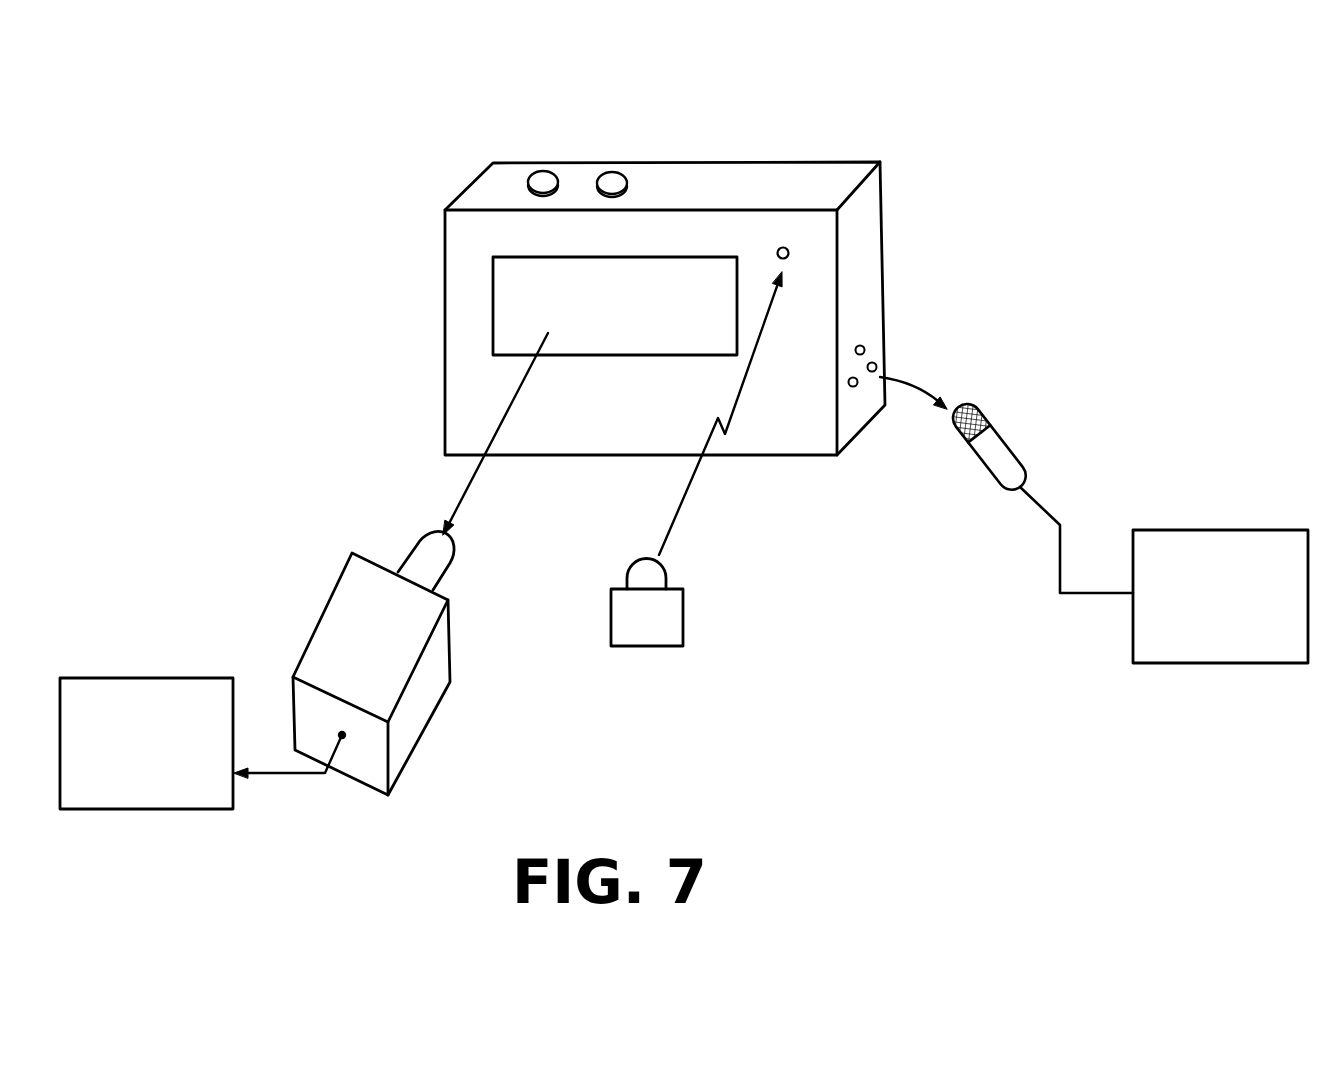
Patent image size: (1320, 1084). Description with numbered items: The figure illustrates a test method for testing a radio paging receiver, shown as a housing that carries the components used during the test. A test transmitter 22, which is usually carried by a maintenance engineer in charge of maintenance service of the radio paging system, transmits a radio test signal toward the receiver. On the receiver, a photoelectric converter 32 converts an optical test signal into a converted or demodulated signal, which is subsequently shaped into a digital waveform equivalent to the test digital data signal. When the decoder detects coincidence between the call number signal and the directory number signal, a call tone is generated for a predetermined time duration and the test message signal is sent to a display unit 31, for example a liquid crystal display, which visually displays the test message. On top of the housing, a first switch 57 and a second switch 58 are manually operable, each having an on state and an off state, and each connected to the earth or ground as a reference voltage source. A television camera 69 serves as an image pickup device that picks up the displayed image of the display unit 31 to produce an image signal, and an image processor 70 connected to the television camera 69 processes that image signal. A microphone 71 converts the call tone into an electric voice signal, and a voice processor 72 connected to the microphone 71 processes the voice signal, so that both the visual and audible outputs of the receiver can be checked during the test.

The test transmitter 22 is at (683, 614).
The display unit 31 is at (498, 307).
The photoelectric converter 32 is at (789, 251).
The first switch 57 is at (543, 180).
The second switch 58 is at (612, 180).
The television camera 69 is at (430, 683).
The image processor 70 is at (147, 677).
The microphone 71 is at (998, 452).
The voice processor 72 is at (1220, 528).